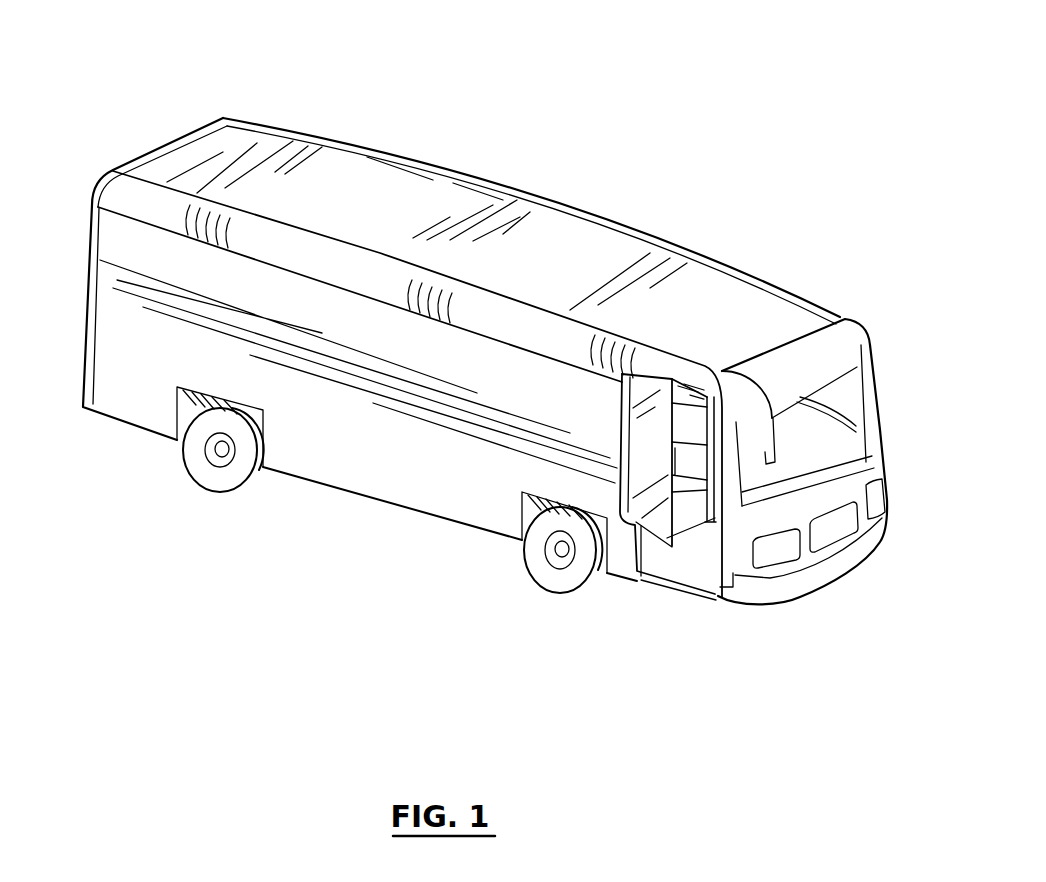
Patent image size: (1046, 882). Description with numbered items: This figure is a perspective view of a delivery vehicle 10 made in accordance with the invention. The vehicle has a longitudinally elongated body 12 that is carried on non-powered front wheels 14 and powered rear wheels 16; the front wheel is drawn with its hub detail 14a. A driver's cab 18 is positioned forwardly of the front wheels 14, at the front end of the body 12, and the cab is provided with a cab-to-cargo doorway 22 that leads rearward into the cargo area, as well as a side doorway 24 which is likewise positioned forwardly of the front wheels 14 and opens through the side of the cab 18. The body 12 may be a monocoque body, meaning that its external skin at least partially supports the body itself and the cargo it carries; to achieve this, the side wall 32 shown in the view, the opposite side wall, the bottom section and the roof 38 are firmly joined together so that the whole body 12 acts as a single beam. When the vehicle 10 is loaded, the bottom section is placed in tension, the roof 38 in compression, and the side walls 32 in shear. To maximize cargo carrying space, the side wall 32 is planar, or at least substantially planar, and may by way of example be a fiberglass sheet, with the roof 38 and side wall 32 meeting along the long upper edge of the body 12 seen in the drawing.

The delivery vehicle 10 is at (593, 110).
The body 12 is at (370, 155).
The roof 38 is at (593, 243).
The side wall 32 is at (405, 483).
The powered rear wheels 16 is at (200, 478).
The non-powered front wheels 14 is at (513, 590).
The front wheel hub 14a is at (557, 594).
The cab-to-cargo doorway 22 is at (684, 423).
The side doorway 24 is at (682, 560).
The driver's cab 18 is at (838, 434).